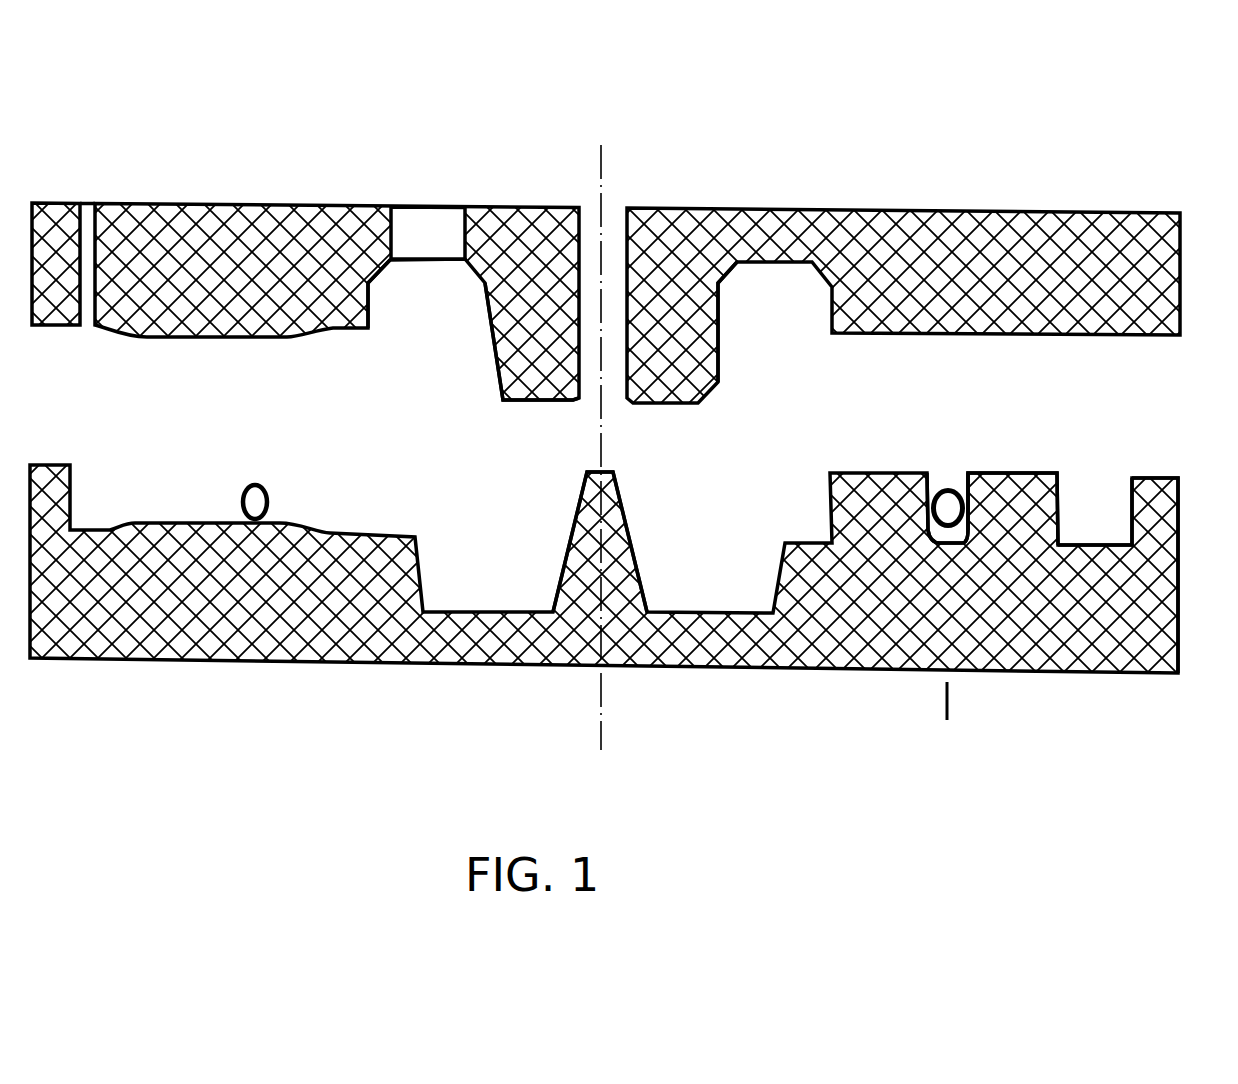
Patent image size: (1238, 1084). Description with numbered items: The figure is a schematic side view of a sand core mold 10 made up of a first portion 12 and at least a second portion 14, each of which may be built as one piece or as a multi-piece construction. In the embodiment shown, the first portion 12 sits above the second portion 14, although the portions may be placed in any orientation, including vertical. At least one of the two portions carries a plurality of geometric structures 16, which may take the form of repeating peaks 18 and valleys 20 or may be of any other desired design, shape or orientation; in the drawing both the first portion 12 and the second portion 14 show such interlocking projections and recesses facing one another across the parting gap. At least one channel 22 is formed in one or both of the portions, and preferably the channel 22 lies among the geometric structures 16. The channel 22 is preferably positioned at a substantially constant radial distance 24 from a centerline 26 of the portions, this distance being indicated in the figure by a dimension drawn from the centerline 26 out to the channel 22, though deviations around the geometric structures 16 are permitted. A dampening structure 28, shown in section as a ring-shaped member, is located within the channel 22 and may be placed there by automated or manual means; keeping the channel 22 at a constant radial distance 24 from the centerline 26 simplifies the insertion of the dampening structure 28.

The sand core mold 10 is at (619, 419).
The first portion 12 is at (897, 233).
The second portion 14 is at (870, 477).
The geometric structures 16 is at (666, 436).
The peaks 18 is at (1048, 480).
The valleys 20 is at (1103, 487).
The channel 22 is at (943, 477).
The radial distance 24 is at (602, 705).
The centerline 26 is at (601, 737).
The dampening structure 28 is at (250, 482).